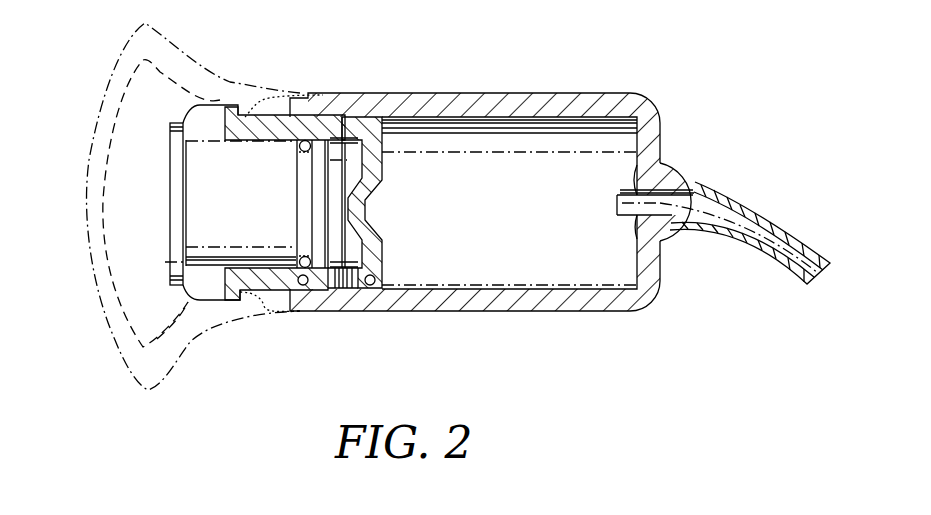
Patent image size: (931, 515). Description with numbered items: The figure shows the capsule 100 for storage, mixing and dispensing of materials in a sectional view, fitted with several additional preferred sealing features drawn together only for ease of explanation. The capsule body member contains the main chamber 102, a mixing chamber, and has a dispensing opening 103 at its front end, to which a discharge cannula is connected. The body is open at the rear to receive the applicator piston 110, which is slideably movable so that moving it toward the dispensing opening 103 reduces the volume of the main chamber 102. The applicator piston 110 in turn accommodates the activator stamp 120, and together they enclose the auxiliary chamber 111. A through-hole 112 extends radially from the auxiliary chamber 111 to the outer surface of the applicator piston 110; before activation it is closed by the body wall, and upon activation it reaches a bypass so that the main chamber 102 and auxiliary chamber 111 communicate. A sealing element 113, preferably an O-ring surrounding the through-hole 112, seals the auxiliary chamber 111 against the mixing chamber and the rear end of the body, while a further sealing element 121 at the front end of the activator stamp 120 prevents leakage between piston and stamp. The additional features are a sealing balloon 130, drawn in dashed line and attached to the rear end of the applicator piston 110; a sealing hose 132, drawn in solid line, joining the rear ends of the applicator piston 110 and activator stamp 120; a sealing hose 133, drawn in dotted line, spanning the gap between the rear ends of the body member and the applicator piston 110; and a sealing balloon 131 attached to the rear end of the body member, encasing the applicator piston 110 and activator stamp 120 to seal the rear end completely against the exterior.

The capsule 100 is at (662, 74).
The main chamber 102 is at (532, 164).
The dispensing opening 103 is at (617, 183).
The applicator piston 110 is at (265, 97).
The auxiliary chamber 111 is at (343, 172).
The through-hole 112 is at (345, 278).
The sealing element 113 is at (302, 288).
The activator stamp 120 is at (200, 156).
The activator sealing element 121 is at (305, 140).
The sealing balloon 130 is at (123, 320).
The sealing balloon 131 is at (87, 252).
The sealing hose 132 is at (190, 302).
The sealing hose 133 is at (264, 308).